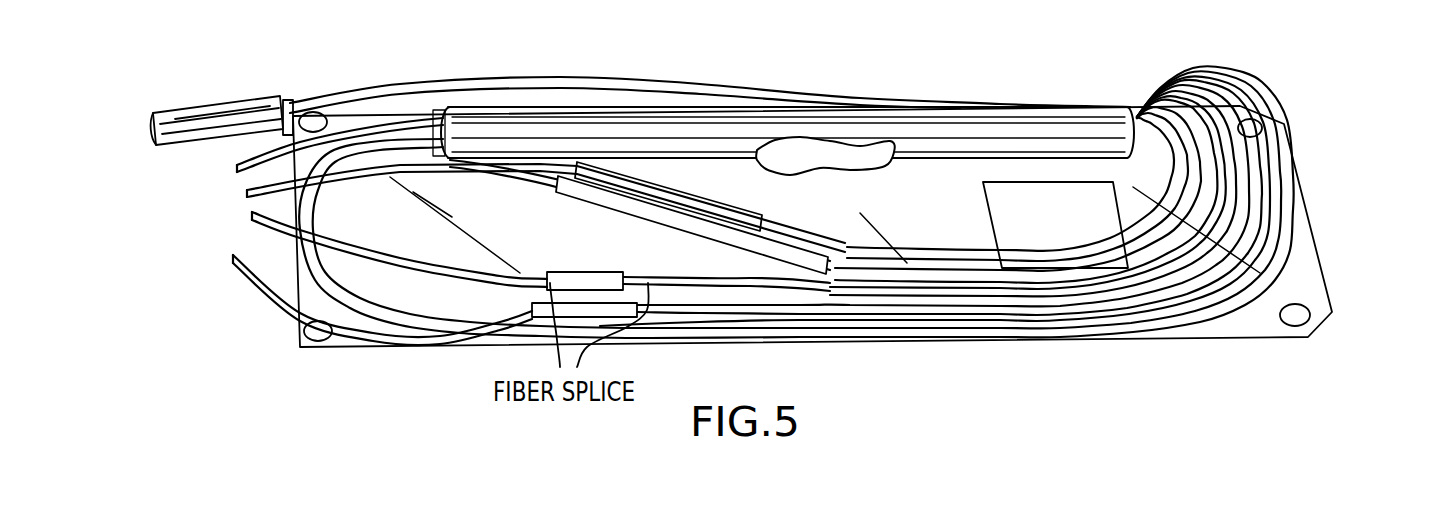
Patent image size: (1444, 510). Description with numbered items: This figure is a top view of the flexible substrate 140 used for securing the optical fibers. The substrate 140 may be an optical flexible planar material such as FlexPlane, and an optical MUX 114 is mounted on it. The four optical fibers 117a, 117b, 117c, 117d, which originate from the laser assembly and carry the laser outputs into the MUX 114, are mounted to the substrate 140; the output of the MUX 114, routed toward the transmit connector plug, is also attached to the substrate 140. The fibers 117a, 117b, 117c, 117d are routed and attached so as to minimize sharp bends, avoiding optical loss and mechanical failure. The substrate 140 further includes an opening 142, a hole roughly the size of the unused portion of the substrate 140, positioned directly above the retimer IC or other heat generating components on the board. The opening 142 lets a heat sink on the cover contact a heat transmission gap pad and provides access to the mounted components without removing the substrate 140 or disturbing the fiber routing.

The optical MUX 114 is at (990, 123).
The optical fiber 117a is at (240, 160).
The optical fiber 117b is at (247, 193).
The optical fiber 117c is at (240, 258).
The optical fiber 117d is at (252, 220).
The flexible substrate 140 is at (1290, 188).
The opening 142 is at (1000, 218).